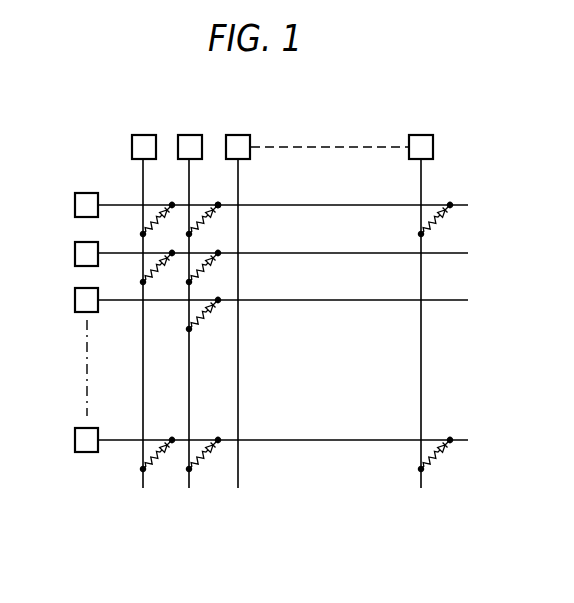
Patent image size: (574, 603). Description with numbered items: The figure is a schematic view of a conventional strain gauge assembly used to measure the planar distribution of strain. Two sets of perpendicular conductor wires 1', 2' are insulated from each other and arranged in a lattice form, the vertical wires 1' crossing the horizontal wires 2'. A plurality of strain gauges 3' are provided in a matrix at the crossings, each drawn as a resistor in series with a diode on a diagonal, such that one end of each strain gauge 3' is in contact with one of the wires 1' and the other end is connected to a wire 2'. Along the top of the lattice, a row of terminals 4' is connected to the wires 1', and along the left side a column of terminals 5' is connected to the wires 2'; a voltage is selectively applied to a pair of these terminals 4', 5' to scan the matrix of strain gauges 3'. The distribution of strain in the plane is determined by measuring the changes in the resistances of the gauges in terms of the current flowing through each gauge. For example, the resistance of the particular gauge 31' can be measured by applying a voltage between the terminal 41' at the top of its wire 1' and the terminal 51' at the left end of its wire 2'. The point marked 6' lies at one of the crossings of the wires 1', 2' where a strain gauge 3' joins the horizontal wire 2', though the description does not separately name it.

The conductor wire 1' is at (261, 323).
The conductor wire 2' is at (283, 187).
The strain gauge 3' is at (210, 225).
The strain gauge 31' is at (210, 332).
The terminal 4' is at (152, 131).
The terminal 41' is at (204, 131).
The terminal 5' is at (67, 204).
The terminal 51' is at (64, 299).
The cross point junction 6' is at (220, 188).